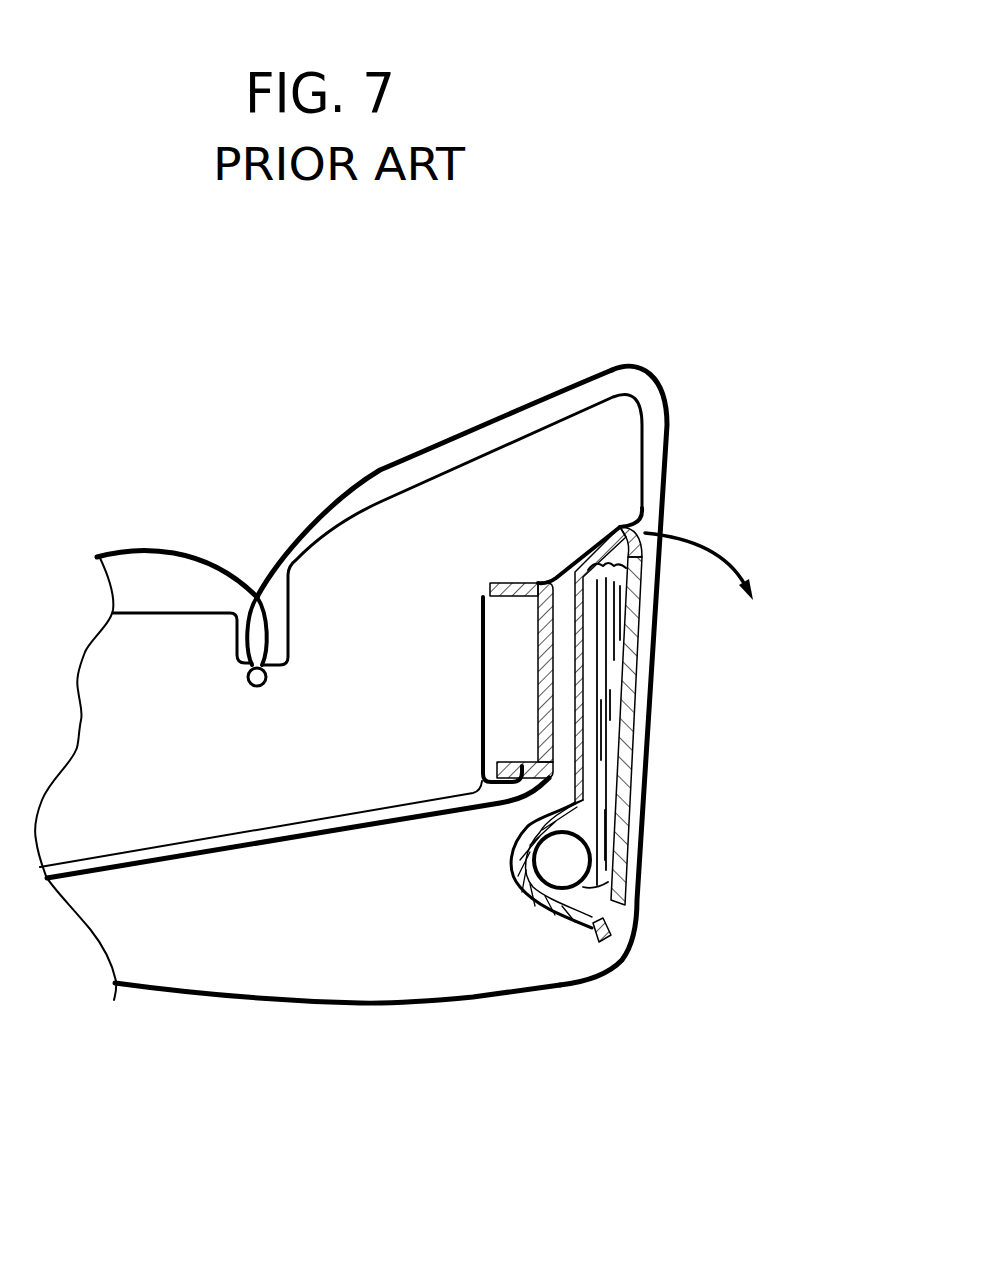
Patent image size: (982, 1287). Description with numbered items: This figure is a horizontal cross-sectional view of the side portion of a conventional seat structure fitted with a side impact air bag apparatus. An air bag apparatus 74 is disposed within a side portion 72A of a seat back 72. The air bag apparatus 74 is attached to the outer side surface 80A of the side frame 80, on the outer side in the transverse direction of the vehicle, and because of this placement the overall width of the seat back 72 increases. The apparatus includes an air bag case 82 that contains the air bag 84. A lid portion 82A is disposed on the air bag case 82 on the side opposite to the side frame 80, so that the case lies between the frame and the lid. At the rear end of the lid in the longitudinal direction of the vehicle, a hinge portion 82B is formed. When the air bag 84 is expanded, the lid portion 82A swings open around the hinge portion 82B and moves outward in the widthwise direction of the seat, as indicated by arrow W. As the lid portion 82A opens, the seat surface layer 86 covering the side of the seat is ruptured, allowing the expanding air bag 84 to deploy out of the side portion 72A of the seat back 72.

The seat back 72 is at (212, 520).
The side portion 72A is at (674, 429).
The arrow W is at (703, 543).
The air bag apparatus 74 is at (570, 932).
The side frame 80 is at (523, 683).
The outer side surface 80A is at (552, 627).
The air bag case 82 is at (513, 860).
The lid portion 82A is at (650, 737).
The hinge portion 82B is at (607, 937).
The air bag 84 is at (603, 778).
The seat surface layer 86 is at (653, 677).